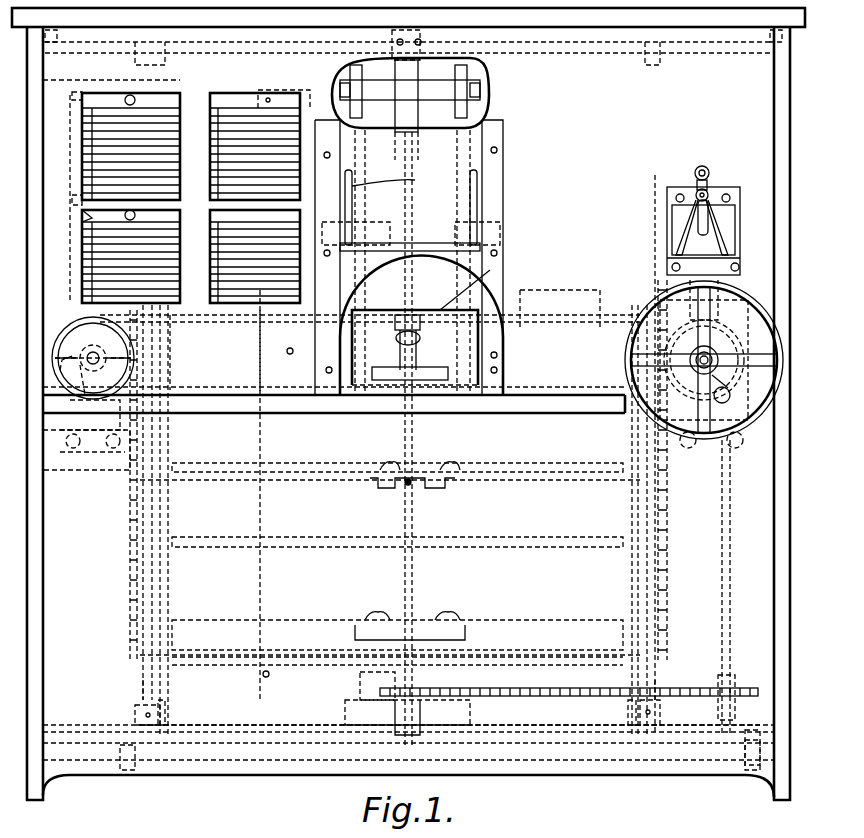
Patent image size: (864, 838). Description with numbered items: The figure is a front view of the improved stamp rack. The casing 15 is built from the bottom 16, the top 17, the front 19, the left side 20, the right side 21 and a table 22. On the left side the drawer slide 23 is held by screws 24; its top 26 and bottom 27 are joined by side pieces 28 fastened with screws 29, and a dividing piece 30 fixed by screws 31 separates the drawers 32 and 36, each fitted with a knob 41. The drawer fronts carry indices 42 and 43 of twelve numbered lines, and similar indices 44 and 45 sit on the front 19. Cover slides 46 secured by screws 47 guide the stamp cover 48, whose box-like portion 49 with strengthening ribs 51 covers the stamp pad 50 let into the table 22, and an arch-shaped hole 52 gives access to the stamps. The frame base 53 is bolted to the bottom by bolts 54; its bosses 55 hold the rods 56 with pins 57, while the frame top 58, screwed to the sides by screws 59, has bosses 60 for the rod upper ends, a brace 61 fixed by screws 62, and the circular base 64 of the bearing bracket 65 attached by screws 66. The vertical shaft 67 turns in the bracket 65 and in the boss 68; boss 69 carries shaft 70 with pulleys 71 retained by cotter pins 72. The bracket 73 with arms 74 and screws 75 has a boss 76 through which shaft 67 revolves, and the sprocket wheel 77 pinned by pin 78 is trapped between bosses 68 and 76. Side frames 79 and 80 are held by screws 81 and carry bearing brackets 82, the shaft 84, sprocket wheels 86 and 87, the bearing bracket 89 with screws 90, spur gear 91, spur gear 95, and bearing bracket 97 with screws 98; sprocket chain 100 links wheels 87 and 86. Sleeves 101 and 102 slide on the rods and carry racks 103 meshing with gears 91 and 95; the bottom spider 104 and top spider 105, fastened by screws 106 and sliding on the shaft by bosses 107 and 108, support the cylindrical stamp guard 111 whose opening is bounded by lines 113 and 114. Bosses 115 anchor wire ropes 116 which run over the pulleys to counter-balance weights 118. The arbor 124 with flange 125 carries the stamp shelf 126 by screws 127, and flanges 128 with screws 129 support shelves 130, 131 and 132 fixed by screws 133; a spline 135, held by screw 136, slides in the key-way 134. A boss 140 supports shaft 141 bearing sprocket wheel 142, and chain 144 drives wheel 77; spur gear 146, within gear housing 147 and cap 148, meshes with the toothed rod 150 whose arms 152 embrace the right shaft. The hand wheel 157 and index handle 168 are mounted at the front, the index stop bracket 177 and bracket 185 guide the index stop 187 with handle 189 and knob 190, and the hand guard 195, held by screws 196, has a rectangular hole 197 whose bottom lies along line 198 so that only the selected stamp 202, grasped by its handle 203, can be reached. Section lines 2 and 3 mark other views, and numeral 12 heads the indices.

The section line 2 is at (683, 793).
The section line 3 is at (13, 70).
The index numeral 12 is at (397, 611).
The casing 15 is at (27, 800).
The bottom 16 is at (212, 775).
The top 17 is at (282, 45).
The front 19 is at (710, 587).
The left side 20 is at (48, 555).
The right side 21 is at (777, 562).
The table 22 is at (250, 413).
The drawer slide 23 is at (215, 342).
The screw 24 is at (35, 98).
The top of drawer slide 26 is at (165, 95).
The bottom of drawer slide 27 is at (178, 330).
The side piece 28 is at (205, 92).
The screw 29 is at (151, 830).
The dividing piece 30 is at (82, 214).
The screw 31 is at (78, 200).
The drawer 32 is at (185, 100).
The drawer 36 is at (170, 213).
The knob 41 is at (128, 96).
The index 42 is at (150, 155).
The index 43 is at (160, 275).
The index 44 is at (288, 110).
The index 45 is at (258, 235).
The cover slide 46 is at (409, 257).
The screw 47 is at (498, 148).
The stamp cover 48 is at (426, 438).
The box-like portion 49 is at (418, 245).
The stamp pad 50 is at (455, 378).
The strengthening rib 51 is at (400, 180).
The arch-shaped hole 52 is at (490, 270).
The frame base 53 is at (272, 720).
The bolt 54 is at (140, 765).
The boss 55 is at (165, 712).
The cylindrical rod 56 is at (143, 678).
The pin 57 is at (140, 713).
The frame top 58 is at (738, 58).
The screw 59 is at (40, 45).
The boss 60 is at (170, 45).
The brace 61 is at (392, 28).
The screw 62 is at (425, 45).
The circular base 64 is at (462, 80).
The bearing bracket 65 is at (418, 110).
The screw 66 is at (440, 70).
The vertical shaft 67 is at (402, 175).
The boss 68 is at (400, 712).
The boss 69 is at (390, 95).
The shaft 70 is at (482, 78).
The pulley 71 is at (348, 78).
The cotter pin 72 is at (342, 88).
The bracket 73 is at (330, 685).
The arm 74 is at (360, 702).
The screw 75 is at (498, 712).
The boss 76 is at (380, 668).
The sprocket wheel 77 is at (460, 680).
The pin 78 is at (425, 705).
The side frame 79 is at (108, 455).
The side frame 80 is at (704, 377).
The screw 81 is at (76, 450).
The bearing bracket 82 is at (341, 364).
The shaft 84 is at (162, 372).
The sprocket wheel 86 is at (85, 320).
The sprocket wheel 87 is at (735, 320).
The bearing bracket 89 is at (60, 385).
The screw 90 is at (70, 441).
The spur gear 91 is at (52, 362).
The spur gear 95 is at (745, 415).
The bearing bracket 97 is at (650, 415).
The screw 98 is at (660, 430).
The sprocket chain 100 is at (560, 309).
The sleeve 101 is at (160, 520).
The sleeve 102 is at (640, 515).
The rack 103 is at (128, 583).
The bottom spider 104 is at (560, 665).
The top spider 105 is at (580, 315).
The screw 106 is at (640, 340).
The boss 107 is at (500, 648).
The boss 108 is at (425, 302).
The stamp guard 111 is at (170, 590).
The vertical bounding line 113 is at (470, 520).
The horizontal bounding line 114 is at (398, 302).
The boss 115 is at (395, 345).
The wire rope 116 is at (355, 78).
The counter-balance weight 118 is at (415, 240).
The arbor 124 is at (400, 600).
The flange 125 is at (404, 616).
The stamp shelf 126 is at (512, 615).
The screw 127 is at (355, 600).
The flange 128 is at (375, 420).
The screw 129 is at (418, 490).
The shelf 130 is at (585, 530).
The shelf 131 is at (548, 465).
The shelf 132 is at (625, 378).
The screw 133 is at (455, 458).
The key-way 134 is at (480, 245).
The spline 135 is at (360, 632).
The screw 136 is at (460, 640).
The boss 140 is at (735, 712).
The shaft 141 is at (732, 626).
The sprocket wheel 142 is at (718, 685).
The sprocket chain 144 is at (588, 705).
The spur gear 146 is at (740, 285).
The gear housing 147 is at (742, 250).
The cap 148 is at (660, 260).
The cylindrical rod 150 is at (660, 300).
The arm 152 is at (625, 357).
The hand wheel 157 is at (665, 290).
The index handle 168 is at (625, 405).
The index stop bracket 177 is at (725, 190).
The bracket 185 is at (690, 230).
The index stop 187 is at (712, 240).
The handle 189 is at (696, 182).
The knob 190 is at (710, 158).
The hand guard 195 is at (244, 505).
The screw 196 is at (262, 680).
The rectangular hole 197 is at (655, 335).
The horizontal line 198 is at (320, 413).
The stamp 202 is at (325, 368).
The handle 203 is at (420, 345).